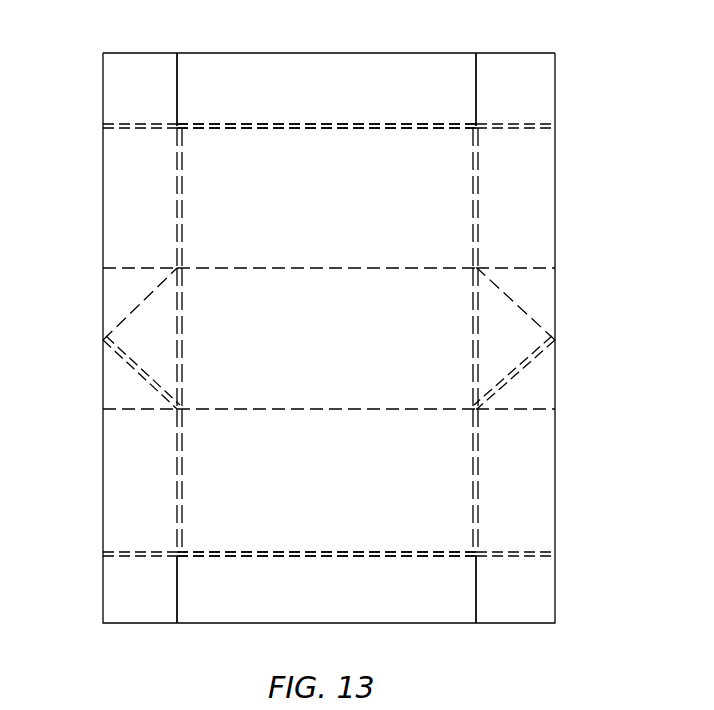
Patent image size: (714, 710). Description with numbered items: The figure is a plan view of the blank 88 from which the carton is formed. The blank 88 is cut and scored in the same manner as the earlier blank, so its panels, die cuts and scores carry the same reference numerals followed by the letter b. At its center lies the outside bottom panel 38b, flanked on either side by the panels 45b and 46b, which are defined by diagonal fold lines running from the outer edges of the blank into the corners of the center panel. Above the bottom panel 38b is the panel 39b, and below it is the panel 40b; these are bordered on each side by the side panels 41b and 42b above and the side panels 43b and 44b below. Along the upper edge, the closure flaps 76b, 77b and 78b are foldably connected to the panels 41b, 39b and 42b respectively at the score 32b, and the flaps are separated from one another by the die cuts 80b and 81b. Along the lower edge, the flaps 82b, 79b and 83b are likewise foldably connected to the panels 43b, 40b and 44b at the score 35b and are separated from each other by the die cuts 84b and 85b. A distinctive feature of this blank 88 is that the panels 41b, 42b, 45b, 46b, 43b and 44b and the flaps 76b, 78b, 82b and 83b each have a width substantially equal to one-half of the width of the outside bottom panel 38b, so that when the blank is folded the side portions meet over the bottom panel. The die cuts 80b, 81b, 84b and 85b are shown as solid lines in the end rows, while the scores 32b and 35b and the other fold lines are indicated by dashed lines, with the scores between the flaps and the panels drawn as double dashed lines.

The blank 88 is at (588, 167).
The closure flap 76b is at (118, 92).
The closure flap 77b is at (333, 92).
The closure flap 78b is at (489, 92).
The die cut 80b is at (177, 62).
The die cut 81b is at (476, 62).
The score 32b is at (289, 129).
The panel 41b is at (121, 222).
The panel 39b is at (315, 222).
The panel 42b is at (495, 222).
The panel 45b is at (138, 333).
The outside bottom panel 38b is at (308, 343).
The panel 46b is at (516, 343).
The panel 43b is at (119, 503).
The panel 40b is at (309, 503).
The panel 44b is at (498, 503).
The score 35b is at (210, 552).
The flap 82b is at (121, 594).
The flap 79b is at (304, 594).
The flap 83b is at (499, 594).
The die cut 84b is at (178, 604).
The die cut 85b is at (477, 595).